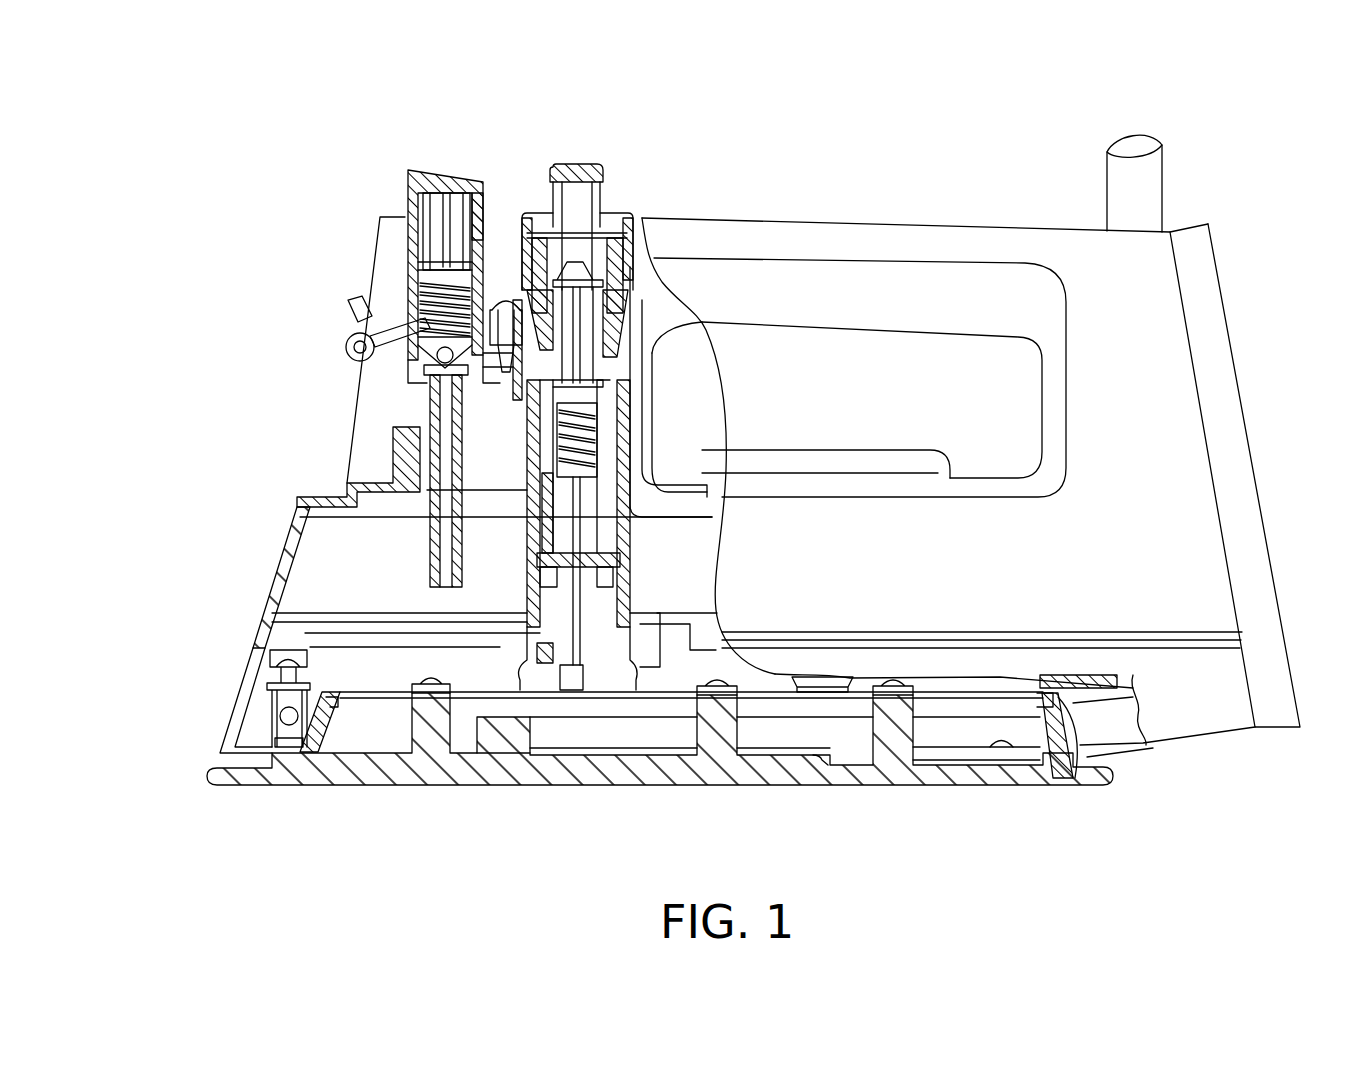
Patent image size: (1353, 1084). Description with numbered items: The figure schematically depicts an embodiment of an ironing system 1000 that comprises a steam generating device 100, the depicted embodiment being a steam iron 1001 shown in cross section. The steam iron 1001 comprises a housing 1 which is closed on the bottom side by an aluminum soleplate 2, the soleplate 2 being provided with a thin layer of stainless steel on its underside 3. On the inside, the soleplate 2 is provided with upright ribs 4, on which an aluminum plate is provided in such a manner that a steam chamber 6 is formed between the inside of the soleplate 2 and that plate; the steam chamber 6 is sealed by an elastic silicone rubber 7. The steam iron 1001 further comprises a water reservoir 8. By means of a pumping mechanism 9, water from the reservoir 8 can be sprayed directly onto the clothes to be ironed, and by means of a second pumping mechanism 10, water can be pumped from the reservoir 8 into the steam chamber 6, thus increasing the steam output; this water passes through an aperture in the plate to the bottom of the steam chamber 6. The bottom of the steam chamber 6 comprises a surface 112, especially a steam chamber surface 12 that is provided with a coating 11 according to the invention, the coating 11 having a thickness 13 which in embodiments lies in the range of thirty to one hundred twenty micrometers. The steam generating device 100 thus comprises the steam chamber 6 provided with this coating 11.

The ironing system 1000 is at (904, 172).
The steam iron 1001 is at (1089, 152).
The housing 1 is at (762, 218).
The steam generating device 100 is at (203, 500).
The water reservoir 8 is at (305, 580).
The pumping mechanism 9 is at (412, 302).
The pumping mechanism 10 is at (578, 320).
The underside 3 is at (650, 778).
The upright ribs 4 is at (433, 720).
The coating 11 is at (590, 750).
The steam chamber surface 12 is at (597, 750).
The soleplate 2 is at (543, 775).
The surface 112 is at (758, 750).
The steam chamber 6 is at (860, 740).
The thickness 13 is at (961, 733).
The elastic silicone rubber 7 is at (338, 705).